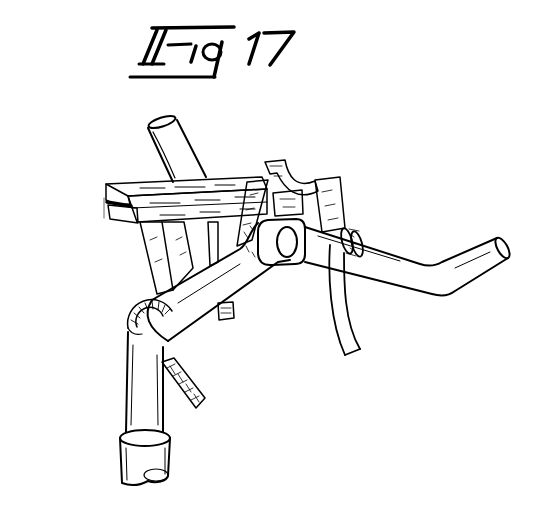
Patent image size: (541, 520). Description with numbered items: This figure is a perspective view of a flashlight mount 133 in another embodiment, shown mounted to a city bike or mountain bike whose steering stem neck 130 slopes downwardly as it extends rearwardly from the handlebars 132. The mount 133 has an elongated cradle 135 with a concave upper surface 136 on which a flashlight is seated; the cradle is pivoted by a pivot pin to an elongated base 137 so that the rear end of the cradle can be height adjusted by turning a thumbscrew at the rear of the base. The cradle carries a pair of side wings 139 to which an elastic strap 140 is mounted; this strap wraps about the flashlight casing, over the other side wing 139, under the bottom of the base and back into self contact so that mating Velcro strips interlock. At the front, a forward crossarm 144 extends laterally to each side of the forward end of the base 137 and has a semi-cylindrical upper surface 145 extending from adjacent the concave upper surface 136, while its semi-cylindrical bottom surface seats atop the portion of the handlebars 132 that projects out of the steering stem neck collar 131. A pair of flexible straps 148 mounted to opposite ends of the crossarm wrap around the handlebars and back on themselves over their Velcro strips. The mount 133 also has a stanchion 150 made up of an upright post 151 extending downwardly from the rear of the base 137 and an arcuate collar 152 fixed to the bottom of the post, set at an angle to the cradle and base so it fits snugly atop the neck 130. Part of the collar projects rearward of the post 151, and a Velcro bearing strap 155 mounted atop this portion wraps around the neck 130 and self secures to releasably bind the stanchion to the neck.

The steering stem neck 130 is at (250, 266).
The steering stem neck collar 131 is at (276, 263).
The handlebars 132 is at (180, 126).
The mount 133 is at (101, 218).
The elongated cradle 135 is at (124, 194).
The concave upper surface 136 is at (153, 186).
The elongated base 137 is at (120, 222).
The side wings 139 is at (258, 180).
The elastic strap 140 is at (228, 321).
The forward crossarm 144 is at (333, 209).
The semi-cylindrical upper surface 145 is at (302, 186).
The flexible straps 148 is at (353, 328).
The stanchion 150 is at (149, 283).
The upright post 151 is at (147, 247).
The arcuate collar 152 is at (134, 322).
The Velcro bearing strap 155 is at (203, 404).